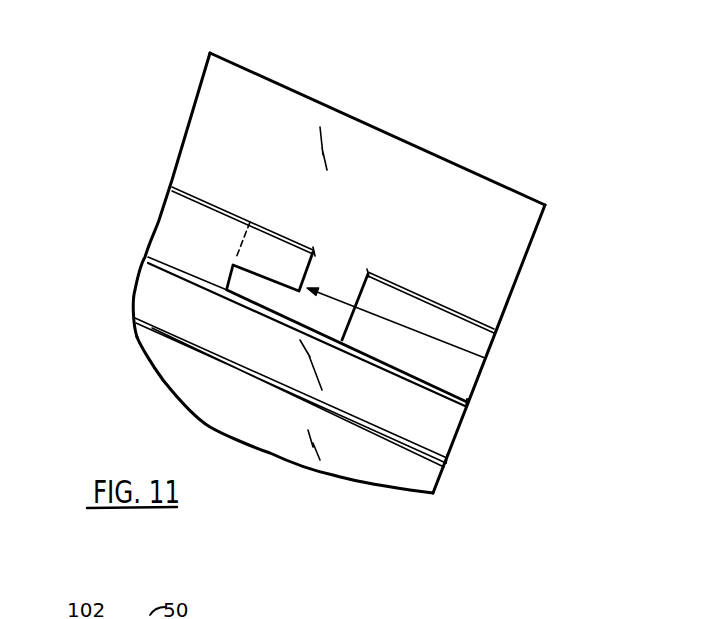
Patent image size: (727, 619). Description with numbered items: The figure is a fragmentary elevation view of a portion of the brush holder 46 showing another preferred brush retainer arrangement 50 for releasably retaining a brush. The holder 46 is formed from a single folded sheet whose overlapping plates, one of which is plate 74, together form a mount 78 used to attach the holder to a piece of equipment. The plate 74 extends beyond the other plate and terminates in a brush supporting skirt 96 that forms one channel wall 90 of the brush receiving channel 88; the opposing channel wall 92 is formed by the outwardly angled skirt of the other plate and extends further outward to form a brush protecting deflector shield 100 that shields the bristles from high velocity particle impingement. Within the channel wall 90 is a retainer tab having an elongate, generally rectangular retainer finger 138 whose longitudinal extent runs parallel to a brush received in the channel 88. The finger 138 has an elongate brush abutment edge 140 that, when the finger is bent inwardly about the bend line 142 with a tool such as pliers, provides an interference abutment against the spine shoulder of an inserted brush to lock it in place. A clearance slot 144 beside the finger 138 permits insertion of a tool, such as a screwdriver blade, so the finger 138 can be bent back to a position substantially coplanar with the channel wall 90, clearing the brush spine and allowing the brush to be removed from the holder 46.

The brush holder 46 is at (364, 99).
The brush retainer arrangement 50 is at (296, 205).
The plate 74 is at (382, 477).
The mount 78 is at (120, 317).
The brush receiving channel 88 is at (494, 209).
The channel wall 90 is at (478, 383).
The channel wall 92 is at (237, 88).
The brush supporting skirt 96 is at (168, 220).
The brush protecting deflector shield 100 is at (520, 237).
The retainer finger 138 is at (486, 363).
The brush abutment edge 140 is at (268, 283).
The bend line 142 is at (250, 222).
The clearance slot 144 is at (346, 253).